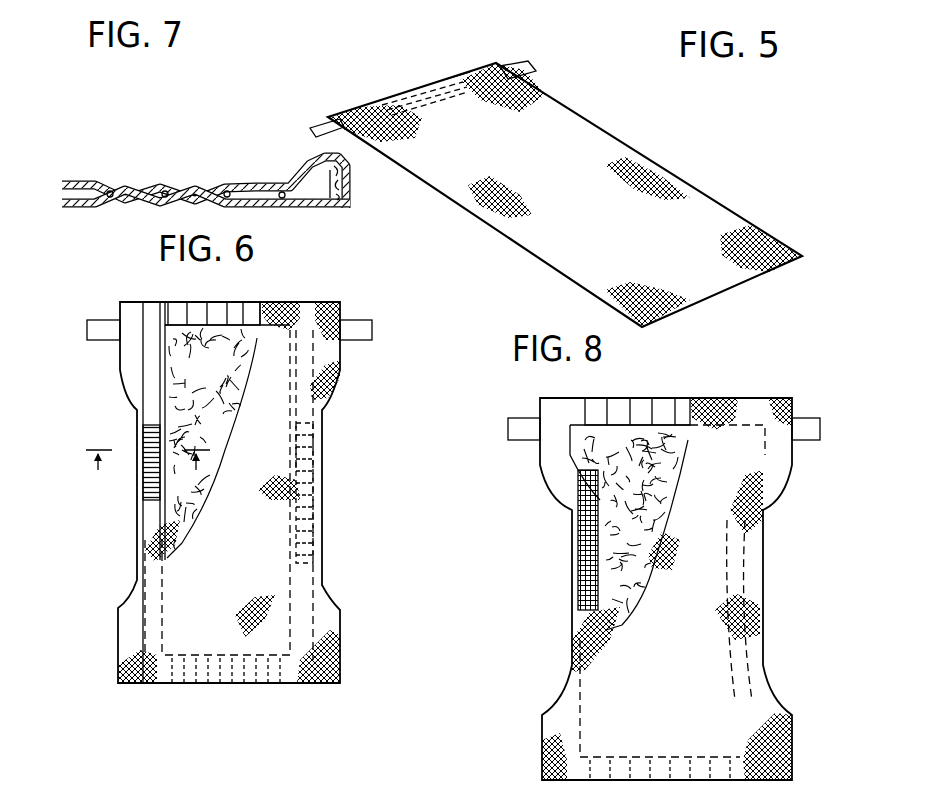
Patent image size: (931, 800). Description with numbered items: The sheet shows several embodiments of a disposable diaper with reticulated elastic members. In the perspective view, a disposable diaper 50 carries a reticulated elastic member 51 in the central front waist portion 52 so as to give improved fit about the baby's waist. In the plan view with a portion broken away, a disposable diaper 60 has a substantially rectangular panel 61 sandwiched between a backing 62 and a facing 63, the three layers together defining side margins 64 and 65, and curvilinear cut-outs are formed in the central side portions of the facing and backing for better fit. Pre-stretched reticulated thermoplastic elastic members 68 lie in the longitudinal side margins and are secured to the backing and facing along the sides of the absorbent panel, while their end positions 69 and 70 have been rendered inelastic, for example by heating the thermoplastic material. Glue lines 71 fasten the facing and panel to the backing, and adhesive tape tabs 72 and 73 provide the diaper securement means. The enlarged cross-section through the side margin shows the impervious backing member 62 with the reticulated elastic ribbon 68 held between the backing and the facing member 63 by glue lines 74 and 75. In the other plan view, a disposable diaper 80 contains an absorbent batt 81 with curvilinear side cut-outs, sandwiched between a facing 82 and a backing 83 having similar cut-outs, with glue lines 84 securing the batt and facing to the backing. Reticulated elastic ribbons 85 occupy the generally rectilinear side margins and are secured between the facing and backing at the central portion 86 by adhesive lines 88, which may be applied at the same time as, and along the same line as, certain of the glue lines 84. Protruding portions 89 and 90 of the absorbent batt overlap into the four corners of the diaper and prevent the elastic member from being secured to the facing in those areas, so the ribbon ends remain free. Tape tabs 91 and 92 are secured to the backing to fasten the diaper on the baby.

In FIG. 5, the disposable diaper 50 is at (481, 222).
In FIG. 5, the reticulated elastic member 51 is at (458, 60).
In FIG. 5, the central front waist portion 52 is at (383, 104).
In FIG. 6, the disposable diaper 60 is at (324, 482).
In FIG. 6, the substantially rectangular panel 61 is at (187, 327).
In FIG. 7, the backing 62 is at (332, 212).
In FIG. 6, the backing 62 is at (127, 353).
In FIG. 7, the facing 63 is at (258, 192).
In FIG. 6, the facing 63 is at (278, 350).
In FIG. 6, the side margin 64 is at (142, 513).
In FIG. 6, the side margin 65 is at (323, 443).
In FIG. 7, the reticulated thermoplastic elastic member 68 is at (163, 192).
In FIG. 6, the reticulated thermoplastic elastic member 68 is at (147, 470).
In FIG. 6, the end portion 69 is at (148, 312).
In FIG. 6, the end portion 70 is at (130, 633).
In FIG. 6, the glue lines 71 is at (225, 311).
In FIG. 6, the adhesive tape tab 72 is at (95, 320).
In FIG. 6, the adhesive tape tab 73 is at (358, 323).
In FIG. 7, the glue line 74 is at (125, 190).
In FIG. 6, the glue line 74 is at (145, 686).
In FIG. 7, the glue line 75 is at (196, 192).
In FIG. 6, the glue line 75 is at (160, 686).
In FIG. 8, the disposable diaper 80 is at (562, 563).
In FIG. 8, the absorbent batt 81 is at (657, 425).
In FIG. 8, the facing 82 is at (728, 442).
In FIG. 8, the backing 83 is at (583, 485).
In FIG. 8, the glue lines 84 is at (626, 410).
In FIG. 8, the reticulated elastic ribbons 85 is at (583, 512).
In FIG. 8, the central portion 86 is at (583, 537).
In FIG. 8, the adhesive lines 88 is at (745, 605).
In FIG. 8, the protruding portion of absorbent batt 89 is at (597, 418).
In FIG. 8, the protruding portion of absorbent batt 90 is at (580, 714).
In FIG. 8, the tape tab 91 is at (518, 422).
In FIG. 8, the tape tab 92 is at (803, 420).